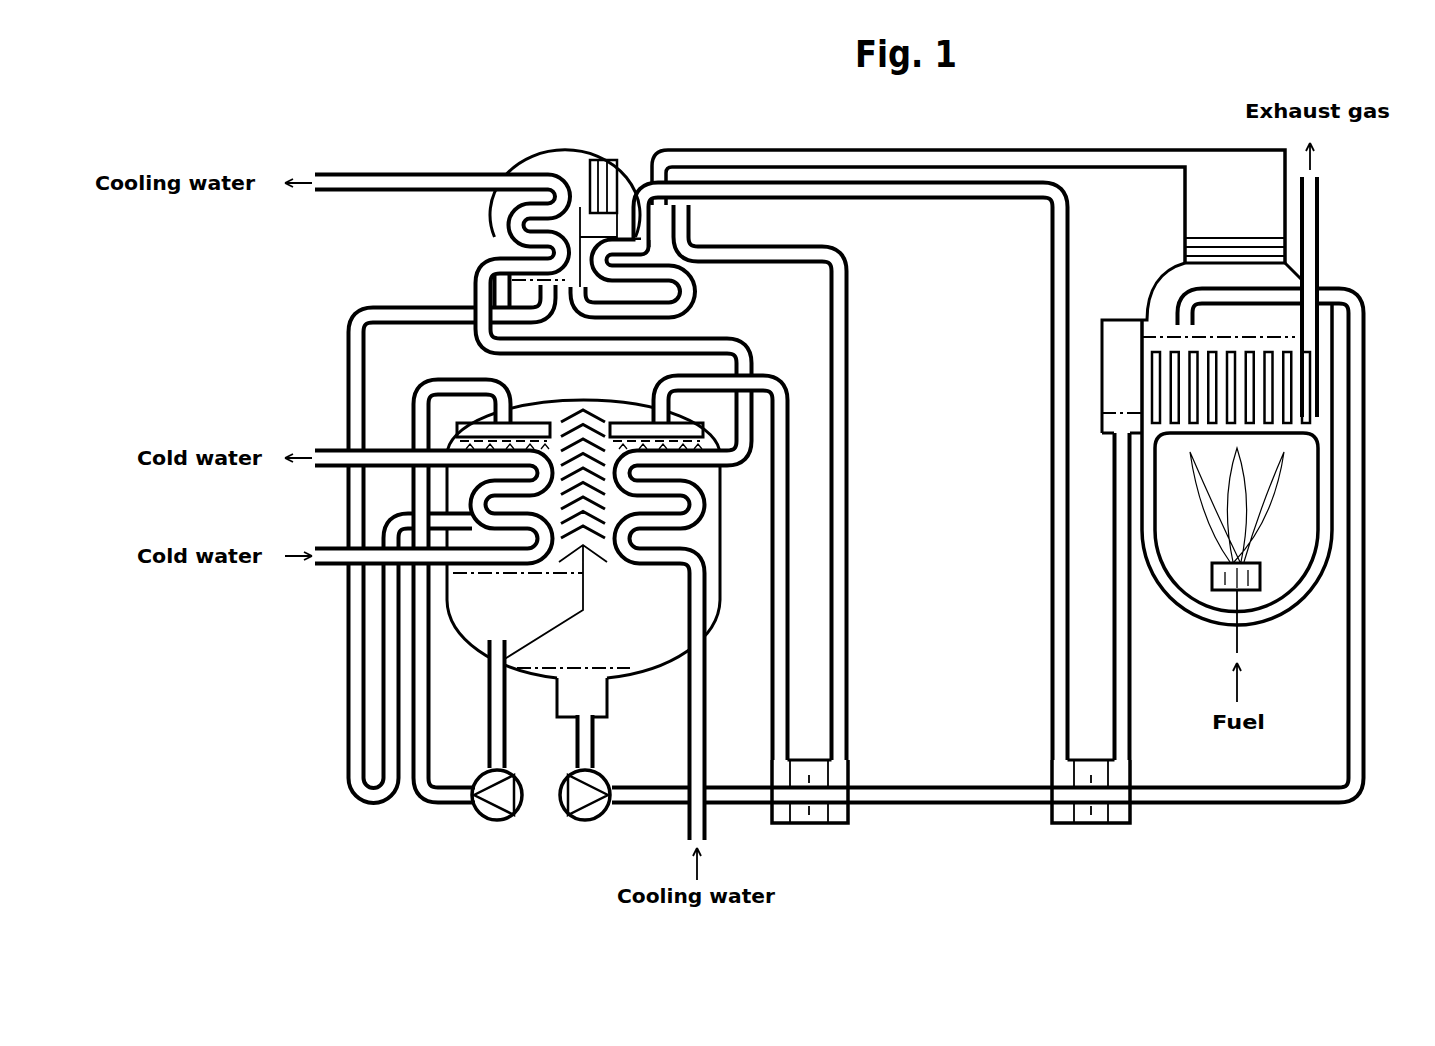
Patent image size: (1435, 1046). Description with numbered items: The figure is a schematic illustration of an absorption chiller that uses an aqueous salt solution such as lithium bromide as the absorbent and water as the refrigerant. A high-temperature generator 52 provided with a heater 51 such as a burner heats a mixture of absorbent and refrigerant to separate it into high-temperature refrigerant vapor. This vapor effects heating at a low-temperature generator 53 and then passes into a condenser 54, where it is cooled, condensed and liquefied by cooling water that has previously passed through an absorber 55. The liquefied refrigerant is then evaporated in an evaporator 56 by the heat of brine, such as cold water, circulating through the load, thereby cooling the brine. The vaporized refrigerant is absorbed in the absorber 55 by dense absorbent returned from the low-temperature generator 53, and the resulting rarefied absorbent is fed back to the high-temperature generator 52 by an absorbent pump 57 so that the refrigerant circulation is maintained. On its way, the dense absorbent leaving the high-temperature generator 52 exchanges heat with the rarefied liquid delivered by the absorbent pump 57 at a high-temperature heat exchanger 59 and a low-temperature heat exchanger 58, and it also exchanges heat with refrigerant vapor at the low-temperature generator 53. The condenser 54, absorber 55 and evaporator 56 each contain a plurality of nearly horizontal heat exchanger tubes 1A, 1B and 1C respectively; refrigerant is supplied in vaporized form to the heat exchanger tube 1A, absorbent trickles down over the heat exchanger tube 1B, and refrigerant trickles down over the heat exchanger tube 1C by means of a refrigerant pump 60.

The heat exchanger tube 1A is at (535, 247).
The heat exchanger tube 1B is at (695, 535).
The heat exchanger tube 1C is at (487, 537).
The heater 51 is at (1252, 593).
The high-temperature generator 52 is at (1327, 470).
The low-temperature generator 53 is at (632, 156).
The condenser 54 is at (536, 150).
The absorber 55 is at (620, 405).
The evaporator 56 is at (528, 414).
The absorbent pump 57 is at (580, 821).
The low-temperature heat exchanger 58 is at (795, 826).
The high-temperature heat exchanger 59 is at (1074, 826).
The refrigerant pump 60 is at (487, 821).